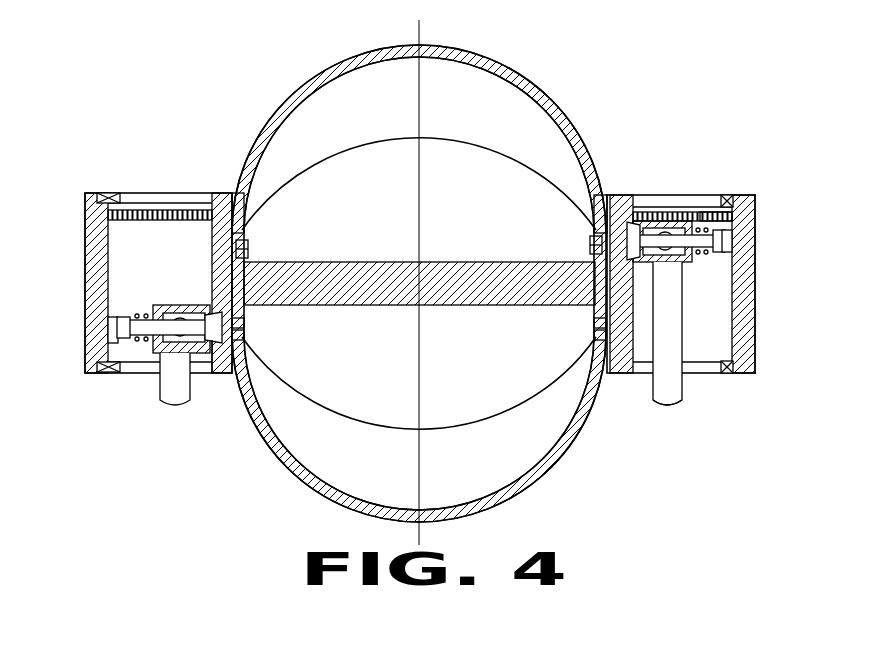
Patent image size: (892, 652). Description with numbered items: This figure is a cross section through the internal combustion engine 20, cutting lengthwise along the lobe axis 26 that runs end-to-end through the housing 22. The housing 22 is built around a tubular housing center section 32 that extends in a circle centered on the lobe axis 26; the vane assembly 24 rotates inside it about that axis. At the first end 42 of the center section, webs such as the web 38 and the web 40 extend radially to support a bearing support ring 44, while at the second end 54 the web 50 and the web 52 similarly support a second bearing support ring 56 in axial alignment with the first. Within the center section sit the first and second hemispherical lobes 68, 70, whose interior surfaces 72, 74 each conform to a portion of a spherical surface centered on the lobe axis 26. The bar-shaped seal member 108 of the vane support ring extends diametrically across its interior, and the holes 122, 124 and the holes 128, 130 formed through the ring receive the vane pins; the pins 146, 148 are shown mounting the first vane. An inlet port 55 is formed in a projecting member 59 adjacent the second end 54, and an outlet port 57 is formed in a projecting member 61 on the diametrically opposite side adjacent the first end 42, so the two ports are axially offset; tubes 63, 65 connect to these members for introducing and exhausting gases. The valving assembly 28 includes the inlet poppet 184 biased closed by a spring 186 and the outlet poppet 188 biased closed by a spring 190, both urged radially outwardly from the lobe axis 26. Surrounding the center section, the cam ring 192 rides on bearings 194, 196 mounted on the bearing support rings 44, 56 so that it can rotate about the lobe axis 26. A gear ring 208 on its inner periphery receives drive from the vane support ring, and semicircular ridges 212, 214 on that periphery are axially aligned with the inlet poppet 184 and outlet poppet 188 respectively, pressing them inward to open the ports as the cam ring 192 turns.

The internal combustion engine 20 is at (578, 123).
The housing 22 is at (587, 150).
The vane assembly 24 is at (503, 163).
The lobe axis 26 is at (419, 535).
The valving assembly 28 is at (700, 212).
The housing center section 32 is at (218, 195).
The web 38 is at (147, 367).
The web 40 is at (686, 400).
The first end 42 is at (225, 373).
The bearing support ring 44 is at (115, 373).
The web 50 is at (153, 200).
The web 52 is at (647, 200).
The second end 54 is at (225, 188).
The inlet port 55 is at (690, 262).
The second bearing support ring 56 is at (117, 195).
The outlet port 57 is at (197, 313).
The projecting member 59 is at (657, 220).
The projecting member 61 is at (180, 307).
The tube 63 is at (652, 395).
The tube 65 is at (177, 390).
The first hemispherical lobe 68 is at (572, 458).
The second hemispherical lobe 70 is at (333, 73).
The interior surface 72 is at (416, 489).
The interior surface 74 is at (409, 111).
The seal member 108 is at (400, 270).
The hole 122 is at (596, 333).
The hole 124 is at (240, 335).
The hole 128 is at (597, 240).
The hole 130 is at (241, 250).
The pin 146 is at (596, 325).
The pin 148 is at (238, 325).
The inlet poppet 184 is at (723, 235).
The spring 186 is at (708, 252).
The outlet poppet 188 is at (133, 313).
The spring 190 is at (135, 316).
The cam ring 192 is at (750, 322).
The bearing 194 is at (740, 370).
The bearing 196 is at (735, 197).
The gear ring 208 is at (712, 210).
The ridge 212 is at (725, 250).
The ridge 214 is at (112, 343).